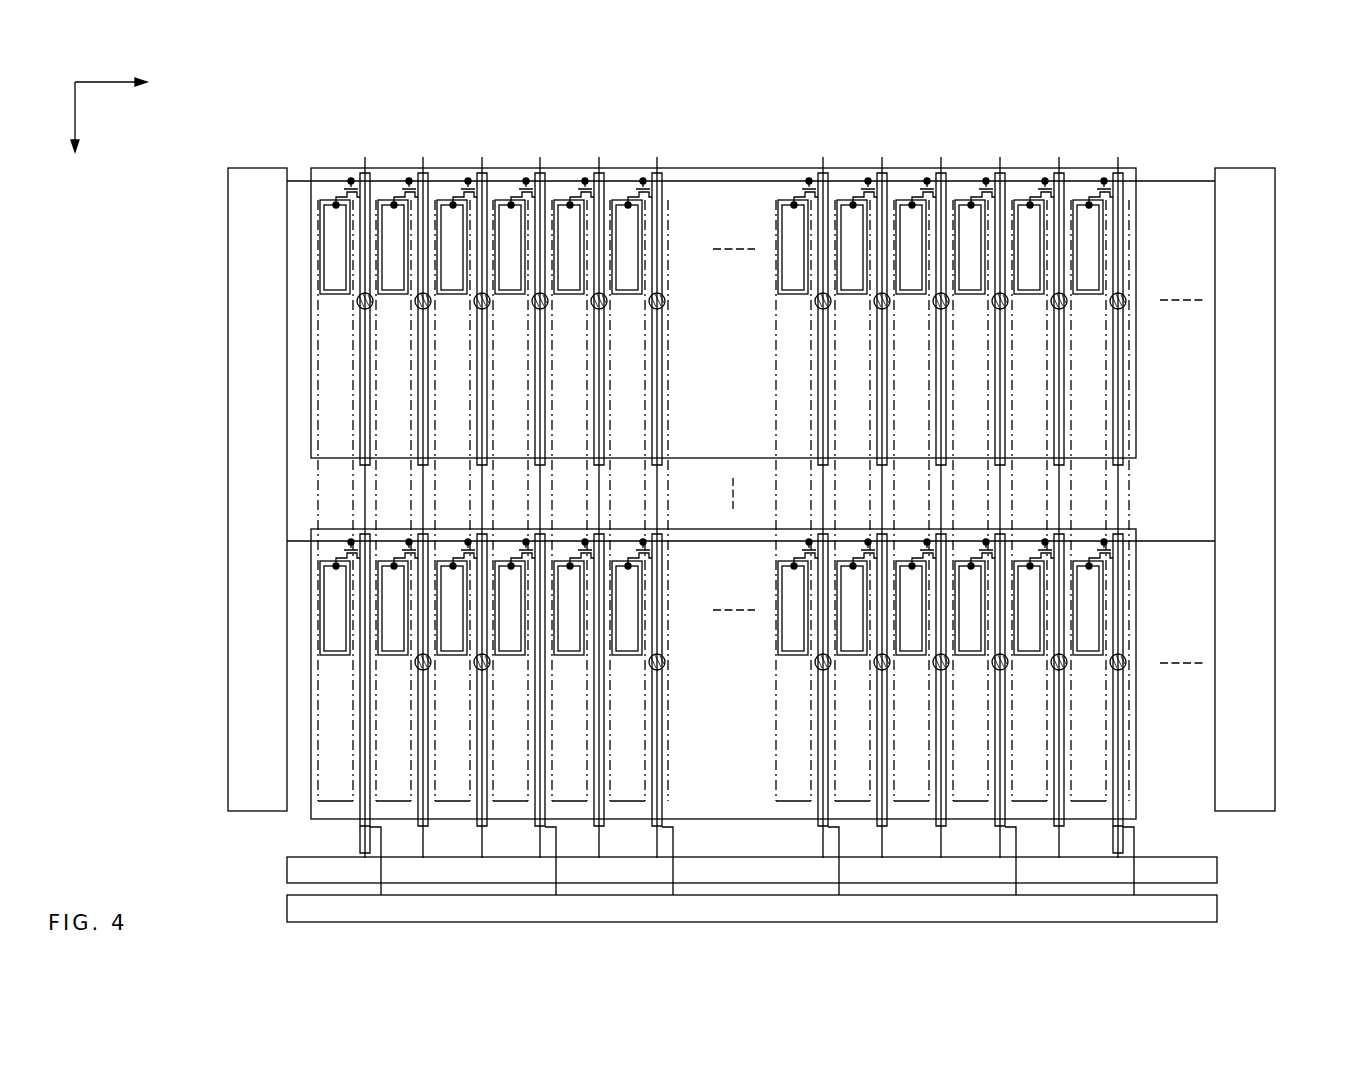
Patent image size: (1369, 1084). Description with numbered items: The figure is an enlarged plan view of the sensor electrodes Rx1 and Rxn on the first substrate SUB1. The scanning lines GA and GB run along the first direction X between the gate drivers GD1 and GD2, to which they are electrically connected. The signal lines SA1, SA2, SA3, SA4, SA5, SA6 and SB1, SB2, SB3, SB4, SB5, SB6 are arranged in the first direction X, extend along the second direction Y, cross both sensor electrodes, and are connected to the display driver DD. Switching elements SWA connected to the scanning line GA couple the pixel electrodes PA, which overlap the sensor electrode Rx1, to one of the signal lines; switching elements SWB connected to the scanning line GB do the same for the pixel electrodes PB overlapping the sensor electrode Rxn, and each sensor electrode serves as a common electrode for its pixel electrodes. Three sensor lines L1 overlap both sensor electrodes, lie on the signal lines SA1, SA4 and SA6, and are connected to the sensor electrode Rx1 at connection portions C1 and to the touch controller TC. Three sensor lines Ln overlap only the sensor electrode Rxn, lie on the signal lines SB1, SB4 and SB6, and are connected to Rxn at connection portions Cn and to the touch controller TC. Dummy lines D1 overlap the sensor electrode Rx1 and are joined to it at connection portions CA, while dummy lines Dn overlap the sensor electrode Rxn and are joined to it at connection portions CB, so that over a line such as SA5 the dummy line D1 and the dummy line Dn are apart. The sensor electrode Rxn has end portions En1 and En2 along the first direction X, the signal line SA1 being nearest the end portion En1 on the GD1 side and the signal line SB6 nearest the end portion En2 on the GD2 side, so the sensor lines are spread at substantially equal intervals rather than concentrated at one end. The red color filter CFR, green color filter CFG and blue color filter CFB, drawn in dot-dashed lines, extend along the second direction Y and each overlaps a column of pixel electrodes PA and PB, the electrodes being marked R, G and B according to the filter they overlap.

The first direction X is at (119, 83).
The second direction Y is at (73, 130).
The gate driver GD1 is at (227, 231).
The gate driver GD2 is at (1277, 237).
The first substrate SUB1 is at (1262, 150).
The scanning line GA is at (303, 180).
The scanning line GB is at (300, 540).
The switching element SWA is at (350, 180).
The switching element SWB is at (337, 553).
The signal line SA1 is at (372, 492).
The signal line SA2 is at (430, 473).
The signal line SA3 is at (489, 473).
The signal line SA4 is at (547, 492).
The signal line SA5 is at (606, 473).
The signal line SA6 is at (664, 492).
The signal line SB1 is at (830, 492).
The signal line SB2 is at (889, 473).
The signal line SB3 is at (948, 473).
The signal line SB4 is at (1007, 492).
The signal line SB5 is at (1066, 473).
The signal line SB6 is at (1125, 492).
The red pixel electrode R is at (652, 427).
The green pixel electrode G is at (711, 427).
The blue pixel electrode B is at (770, 427).
The pixel electrode PA is at (333, 293).
The pixel electrode PB is at (333, 654).
The connection portion C1 is at (494, 332).
The connection portion CA is at (753, 332).
The sensor line L1 is at (481, 500).
The dummy line D1 is at (752, 500).
The sensor electrode Rx1 is at (1137, 362).
The sensor electrode Rxn is at (1137, 750).
The connection portion CB is at (724, 687).
The connection portion Cn is at (954, 687).
The dummy line Dn is at (712, 769).
The sensor line Ln is at (941, 769).
The end portion En1 is at (307, 775).
The end portion En2 is at (1142, 798).
The red color filter CFR is at (643, 833).
The green color filter CFG is at (720, 833).
The blue color filter CFB is at (768, 833).
The display driver DD is at (287, 872).
The touch controller TC is at (287, 908).